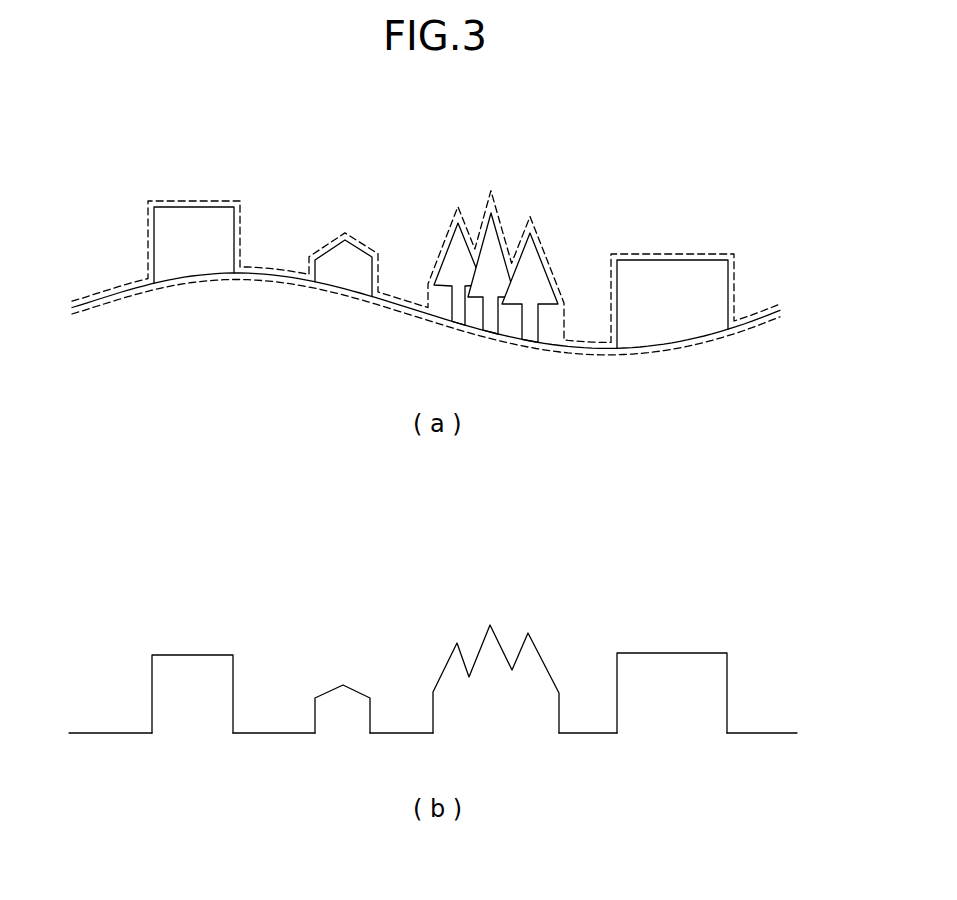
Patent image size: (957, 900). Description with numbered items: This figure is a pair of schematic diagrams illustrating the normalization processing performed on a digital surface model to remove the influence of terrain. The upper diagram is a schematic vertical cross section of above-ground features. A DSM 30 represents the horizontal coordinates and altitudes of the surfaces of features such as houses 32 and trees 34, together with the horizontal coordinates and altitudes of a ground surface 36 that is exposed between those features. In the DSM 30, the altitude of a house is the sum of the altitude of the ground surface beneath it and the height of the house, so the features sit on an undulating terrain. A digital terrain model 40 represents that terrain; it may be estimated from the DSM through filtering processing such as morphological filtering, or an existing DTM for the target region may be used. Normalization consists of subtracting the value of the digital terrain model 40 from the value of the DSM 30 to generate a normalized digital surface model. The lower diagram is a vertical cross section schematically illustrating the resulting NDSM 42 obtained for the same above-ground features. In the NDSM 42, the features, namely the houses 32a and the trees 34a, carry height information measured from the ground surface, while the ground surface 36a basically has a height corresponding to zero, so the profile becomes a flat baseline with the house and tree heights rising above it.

The DSM 30 is at (765, 297).
The houses 32 is at (212, 207).
The trees 34 is at (505, 238).
The ground surface 36 is at (100, 298).
The digital terrain model 40 is at (737, 335).
The houses 32a is at (208, 655).
The trees 34a is at (505, 648).
The ground surface 36a is at (100, 732).
The NDSM 42 is at (773, 732).